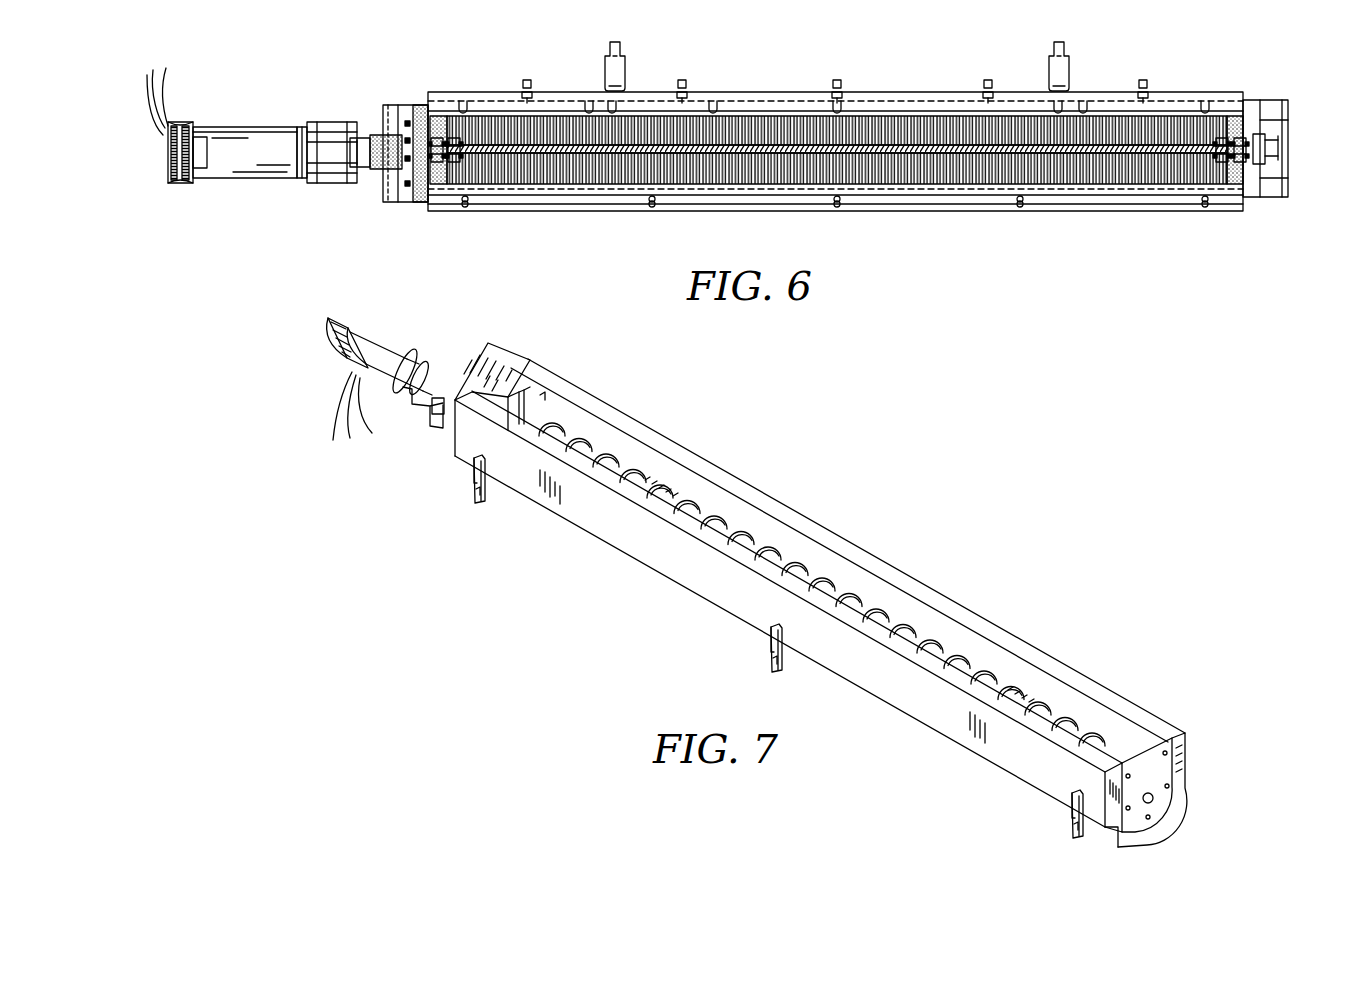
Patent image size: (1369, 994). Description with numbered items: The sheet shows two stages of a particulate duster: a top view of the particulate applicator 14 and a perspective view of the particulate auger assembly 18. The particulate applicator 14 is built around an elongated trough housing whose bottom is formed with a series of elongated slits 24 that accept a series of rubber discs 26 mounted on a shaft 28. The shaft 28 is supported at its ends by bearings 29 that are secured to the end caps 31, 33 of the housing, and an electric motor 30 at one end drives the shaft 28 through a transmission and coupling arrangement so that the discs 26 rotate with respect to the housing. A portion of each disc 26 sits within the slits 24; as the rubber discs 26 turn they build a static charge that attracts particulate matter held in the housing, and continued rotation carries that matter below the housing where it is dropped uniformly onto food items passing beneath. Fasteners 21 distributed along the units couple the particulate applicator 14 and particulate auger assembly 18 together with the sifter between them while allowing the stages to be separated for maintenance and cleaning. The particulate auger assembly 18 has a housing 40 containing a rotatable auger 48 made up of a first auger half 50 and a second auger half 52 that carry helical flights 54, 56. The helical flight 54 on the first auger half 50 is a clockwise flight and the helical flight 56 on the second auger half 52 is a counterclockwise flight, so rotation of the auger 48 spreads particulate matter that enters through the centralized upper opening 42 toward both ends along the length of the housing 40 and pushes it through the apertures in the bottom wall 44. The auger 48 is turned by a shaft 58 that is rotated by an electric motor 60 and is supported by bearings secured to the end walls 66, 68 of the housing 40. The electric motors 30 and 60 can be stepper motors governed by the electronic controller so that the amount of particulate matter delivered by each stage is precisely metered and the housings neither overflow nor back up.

In FIG. 6, the particulate applicator 14 is at (1106, 248).
In FIG. 6, the fasteners 21 is at (620, 62).
In FIG. 7, the fasteners 21 is at (493, 490).
In FIG. 6, the elongated slits 24 is at (862, 134).
In FIG. 6, the rubber discs 26 is at (1003, 165).
In FIG. 6, the shaft 28 is at (1272, 195).
In FIG. 6, the bearings 29 is at (410, 138).
In FIG. 6, the electric motor 30 is at (263, 132).
In FIG. 6, the end cap 31 is at (1270, 118).
In FIG. 6, the end cap 33 is at (418, 108).
In FIG. 7, the particulate auger assembly 18 is at (795, 568).
In FIG. 7, the housing 40 is at (678, 560).
In FIG. 7, the centralized upper opening 42 is at (732, 492).
In FIG. 7, the bottom wall 44 is at (953, 745).
In FIG. 7, the auger 48 is at (870, 608).
In FIG. 7, the first auger half 50 is at (607, 452).
In FIG. 7, the second auger half 52 is at (1038, 702).
In FIG. 7, the helical flight 54 is at (655, 488).
In FIG. 7, the helical flight 56 is at (938, 650).
In FIG. 7, the shaft 58 is at (1153, 798).
In FIG. 7, the electric motor 60 is at (388, 353).
In FIG. 7, the end wall 66 is at (510, 388).
In FIG. 7, the end wall 68 is at (1150, 768).